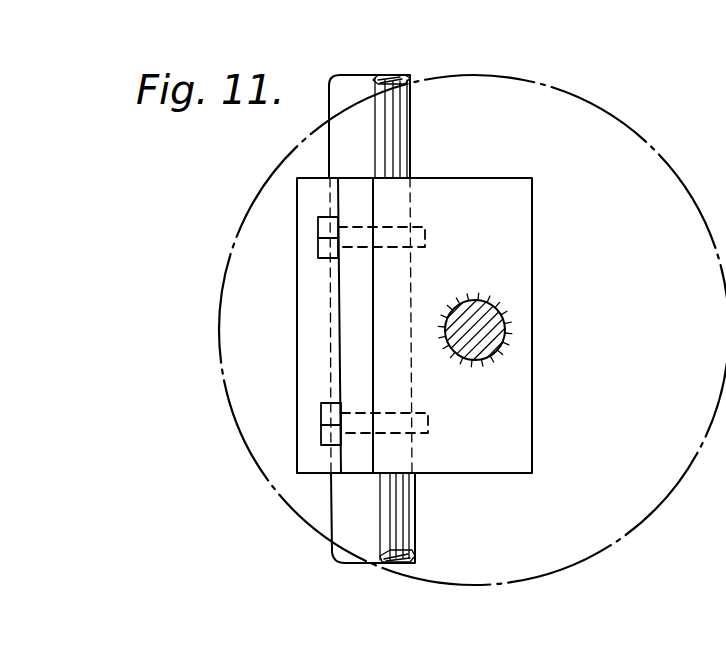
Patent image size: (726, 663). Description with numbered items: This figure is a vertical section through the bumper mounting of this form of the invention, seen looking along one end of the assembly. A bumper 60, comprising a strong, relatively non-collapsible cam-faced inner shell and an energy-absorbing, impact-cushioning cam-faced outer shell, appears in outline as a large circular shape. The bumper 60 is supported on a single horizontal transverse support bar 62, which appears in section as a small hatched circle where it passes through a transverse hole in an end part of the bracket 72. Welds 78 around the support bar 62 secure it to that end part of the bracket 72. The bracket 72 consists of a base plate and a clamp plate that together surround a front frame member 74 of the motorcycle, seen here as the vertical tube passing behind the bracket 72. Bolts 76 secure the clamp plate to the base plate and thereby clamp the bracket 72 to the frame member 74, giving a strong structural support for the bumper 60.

The bumper 60 is at (648, 138).
The support bar 62 is at (497, 314).
The bracket 72 is at (556, 251).
The front frame member 74 is at (392, 143).
The bolt 76 is at (318, 252).
The weld 78 is at (500, 350).